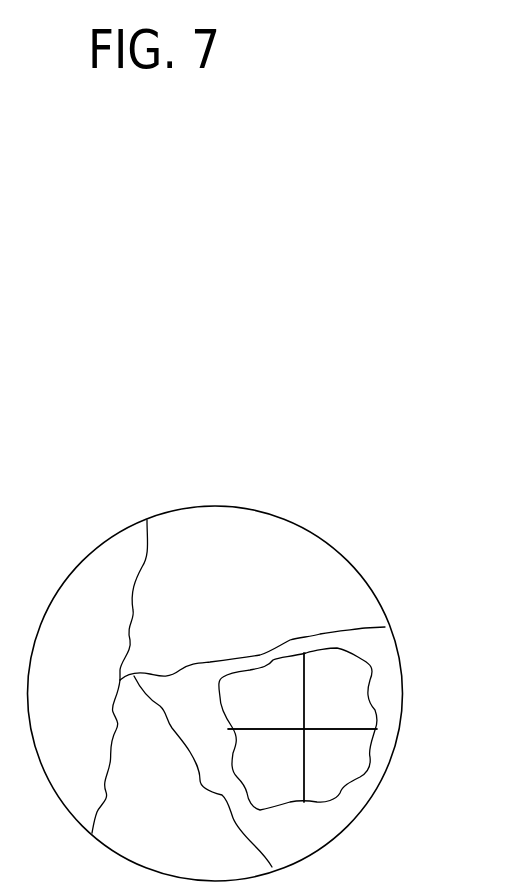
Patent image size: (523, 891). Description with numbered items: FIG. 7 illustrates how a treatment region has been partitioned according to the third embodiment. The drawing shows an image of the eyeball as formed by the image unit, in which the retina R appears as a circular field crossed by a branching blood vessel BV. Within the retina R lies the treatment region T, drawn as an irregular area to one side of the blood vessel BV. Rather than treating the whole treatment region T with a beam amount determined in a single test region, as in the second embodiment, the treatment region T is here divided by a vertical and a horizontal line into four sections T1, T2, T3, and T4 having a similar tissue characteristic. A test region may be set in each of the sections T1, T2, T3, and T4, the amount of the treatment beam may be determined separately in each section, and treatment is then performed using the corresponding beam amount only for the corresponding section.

The retina R is at (313, 557).
The blood vessel BV is at (385, 627).
The treatment region T is at (353, 729).
The first section T1 is at (266, 691).
The second section T2 is at (340, 691).
The third section T3 is at (266, 765).
The fourth section T4 is at (340, 765).